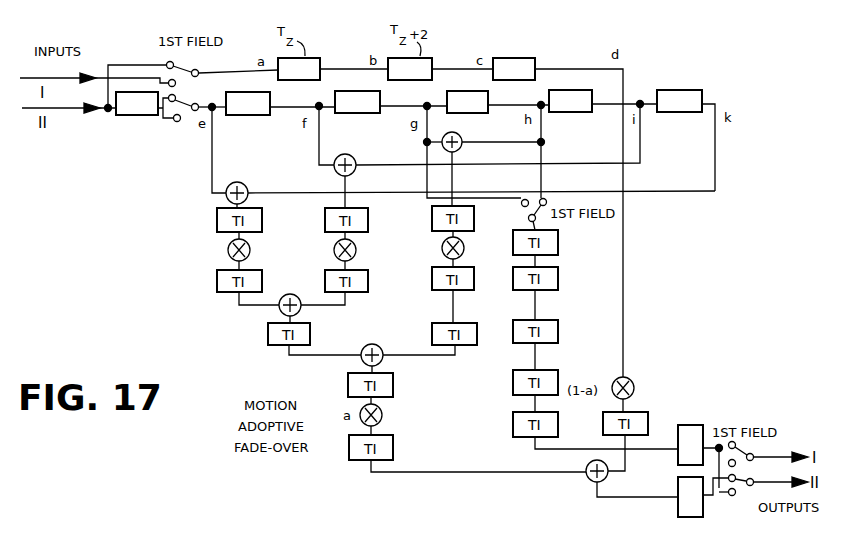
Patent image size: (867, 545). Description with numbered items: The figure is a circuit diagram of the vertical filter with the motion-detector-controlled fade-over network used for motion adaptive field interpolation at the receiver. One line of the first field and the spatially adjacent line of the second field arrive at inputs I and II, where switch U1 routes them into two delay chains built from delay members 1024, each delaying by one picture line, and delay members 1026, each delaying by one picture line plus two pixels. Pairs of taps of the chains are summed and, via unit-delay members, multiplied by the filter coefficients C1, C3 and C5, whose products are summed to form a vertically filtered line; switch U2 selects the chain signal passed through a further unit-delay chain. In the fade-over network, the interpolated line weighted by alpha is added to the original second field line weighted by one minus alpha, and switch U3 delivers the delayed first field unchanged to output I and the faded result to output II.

The delay member 1024 is at (409, 101).
The delay member 1026 is at (461, 79).
The switch U1 is at (183, 103).
The switch U2 is at (585, 215).
The switch U3 is at (743, 458).
The filter coefficient C1 is at (439, 249).
The filter coefficient C3 is at (332, 251).
The filter coefficient C5 is at (226, 251).